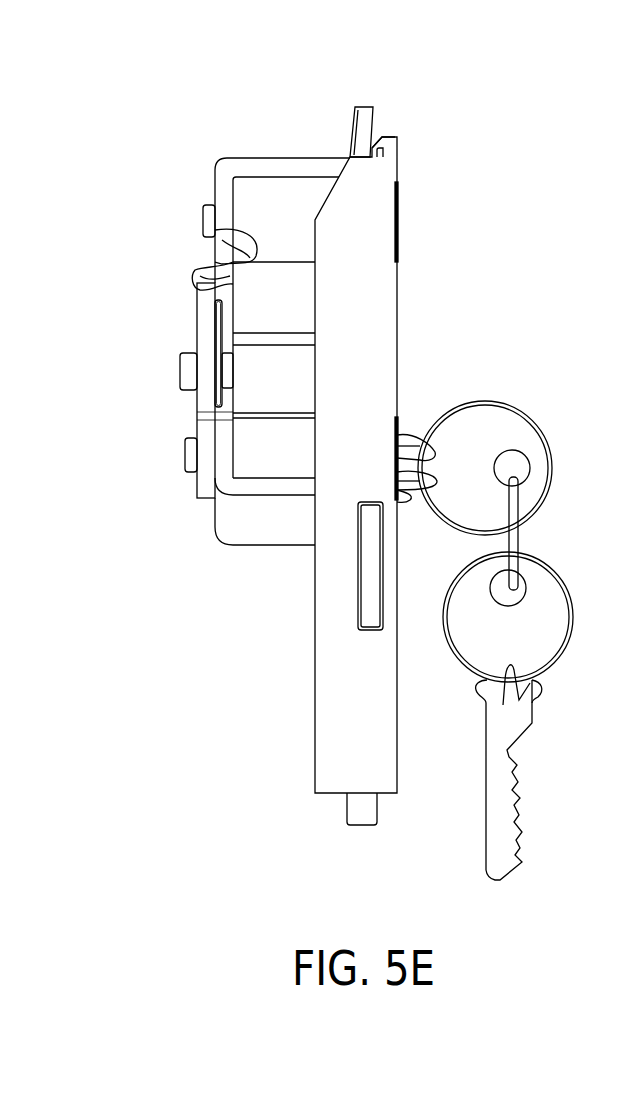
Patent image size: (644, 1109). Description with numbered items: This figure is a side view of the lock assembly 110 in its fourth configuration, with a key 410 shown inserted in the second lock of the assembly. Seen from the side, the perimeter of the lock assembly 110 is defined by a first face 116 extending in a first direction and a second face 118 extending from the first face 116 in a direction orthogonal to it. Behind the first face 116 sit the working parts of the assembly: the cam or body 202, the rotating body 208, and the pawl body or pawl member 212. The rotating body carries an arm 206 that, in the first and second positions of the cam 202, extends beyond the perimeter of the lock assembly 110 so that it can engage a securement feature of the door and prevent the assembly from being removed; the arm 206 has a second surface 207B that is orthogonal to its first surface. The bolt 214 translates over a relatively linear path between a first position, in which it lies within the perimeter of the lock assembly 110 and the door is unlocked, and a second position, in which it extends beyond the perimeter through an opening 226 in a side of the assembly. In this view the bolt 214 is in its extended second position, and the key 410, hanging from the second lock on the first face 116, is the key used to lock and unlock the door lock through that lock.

The lock assembly 110 is at (97, 150).
The first face 116 is at (380, 323).
The second face 118 is at (393, 140).
The cam 202 is at (223, 198).
The arm 206 is at (362, 113).
The second surface 207B is at (358, 130).
The rotating body 208 is at (200, 485).
The pawl member 212 is at (202, 338).
The bolt 214 is at (370, 617).
The opening 226 is at (358, 540).
The key 410 is at (515, 420).